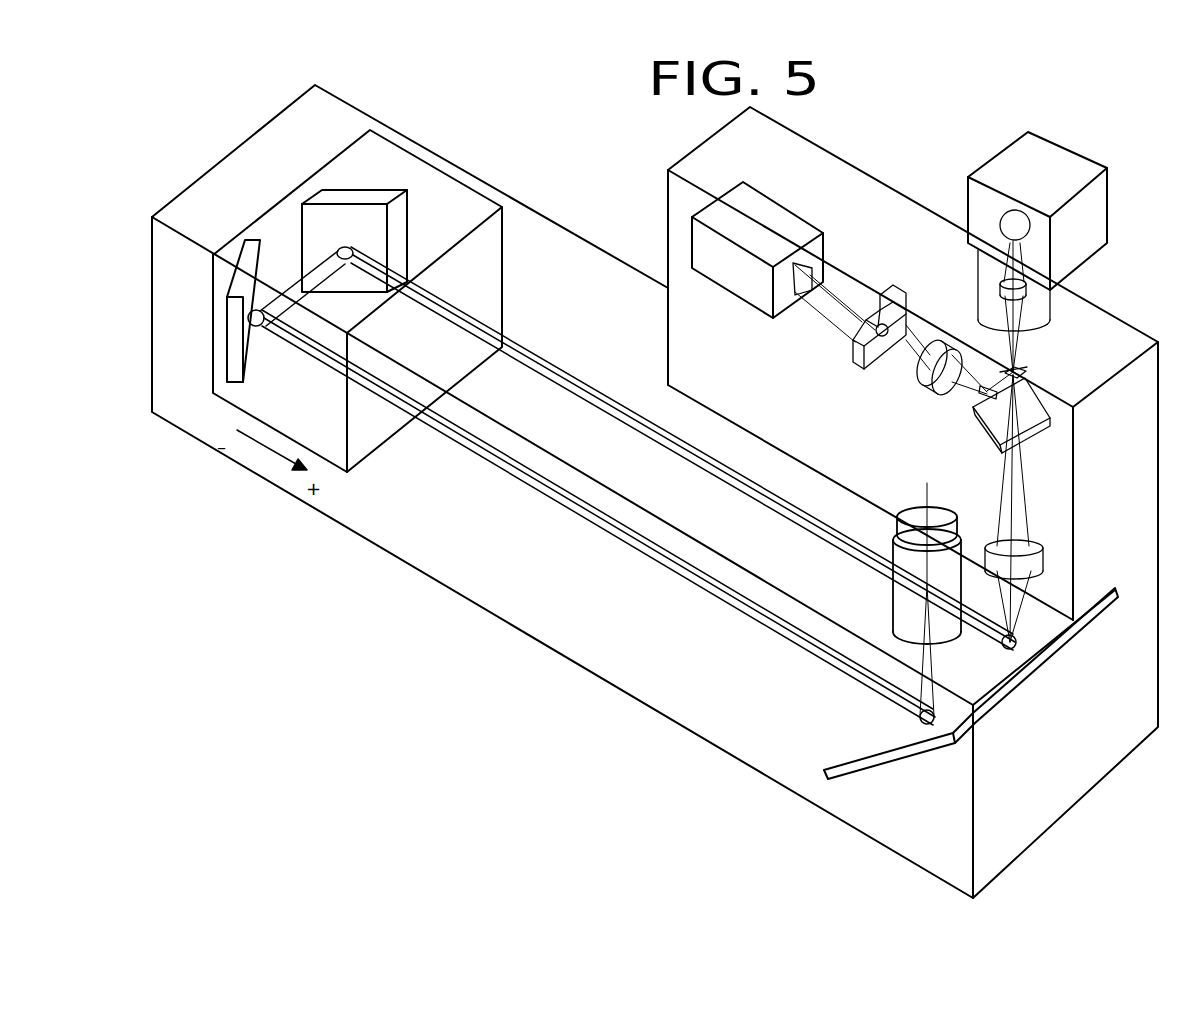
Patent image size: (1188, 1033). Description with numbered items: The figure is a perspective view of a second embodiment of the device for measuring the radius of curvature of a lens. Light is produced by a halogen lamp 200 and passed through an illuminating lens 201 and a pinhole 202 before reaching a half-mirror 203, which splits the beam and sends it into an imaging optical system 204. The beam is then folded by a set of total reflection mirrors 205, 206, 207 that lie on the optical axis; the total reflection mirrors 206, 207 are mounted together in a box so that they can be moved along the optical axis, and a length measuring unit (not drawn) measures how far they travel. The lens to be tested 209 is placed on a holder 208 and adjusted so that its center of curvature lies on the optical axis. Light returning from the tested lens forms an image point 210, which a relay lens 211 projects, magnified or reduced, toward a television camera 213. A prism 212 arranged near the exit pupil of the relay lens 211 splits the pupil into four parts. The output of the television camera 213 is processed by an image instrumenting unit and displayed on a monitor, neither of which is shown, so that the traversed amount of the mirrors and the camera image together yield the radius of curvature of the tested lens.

The halogen lamp 200 is at (1018, 208).
The illuminating lens 201 is at (1028, 296).
The pinhole 202 is at (1020, 368).
The half-mirror 203 is at (1040, 415).
The imaging optical system 204 is at (1020, 552).
The total reflection mirror 205 is at (1040, 641).
The total reflection mirror 206 is at (387, 186).
The total reflection mirror 207 is at (232, 370).
The holder 208 is at (900, 607).
The lens to be tested 209 is at (932, 516).
The image point 210 is at (982, 392).
The relay lens 211 is at (925, 378).
The prism 212 is at (857, 360).
The television camera 213 is at (742, 293).